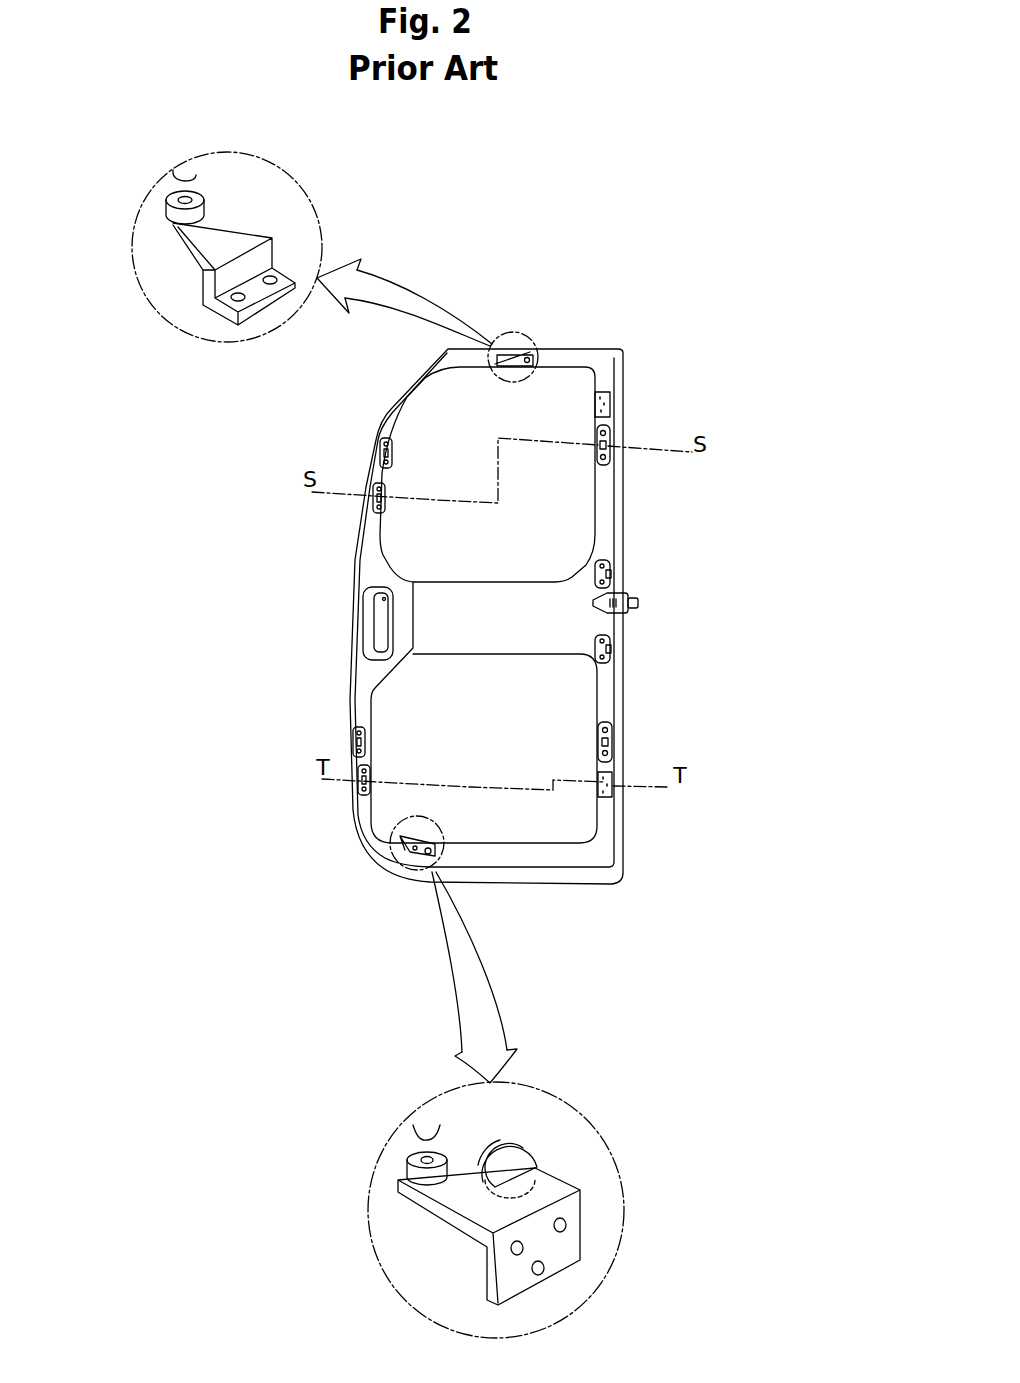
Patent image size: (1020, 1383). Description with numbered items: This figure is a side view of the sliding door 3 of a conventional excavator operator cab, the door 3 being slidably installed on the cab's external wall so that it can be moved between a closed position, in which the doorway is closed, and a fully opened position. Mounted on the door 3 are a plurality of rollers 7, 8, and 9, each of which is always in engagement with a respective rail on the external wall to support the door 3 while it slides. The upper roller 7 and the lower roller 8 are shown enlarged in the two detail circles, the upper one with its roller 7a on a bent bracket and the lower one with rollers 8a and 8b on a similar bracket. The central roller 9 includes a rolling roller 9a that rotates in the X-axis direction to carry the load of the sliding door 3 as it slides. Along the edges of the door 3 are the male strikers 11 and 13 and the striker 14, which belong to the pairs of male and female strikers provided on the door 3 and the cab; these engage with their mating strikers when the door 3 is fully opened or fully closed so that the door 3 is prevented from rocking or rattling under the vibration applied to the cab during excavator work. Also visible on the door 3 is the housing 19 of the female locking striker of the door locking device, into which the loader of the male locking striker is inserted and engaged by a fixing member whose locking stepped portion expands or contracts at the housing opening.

The door 3 is at (613, 349).
The roller 7 is at (513, 324).
The upper roller 7a is at (195, 208).
The roller 8 is at (404, 874).
The lower roller 8a is at (518, 1147).
The lower roller 8b is at (410, 1160).
The central roller 9 is at (632, 611).
The rolling roller 9a is at (638, 601).
The male striker 11 is at (375, 506).
The male striker 13 is at (380, 444).
The striker 14 is at (610, 395).
The housing 19 is at (380, 603).